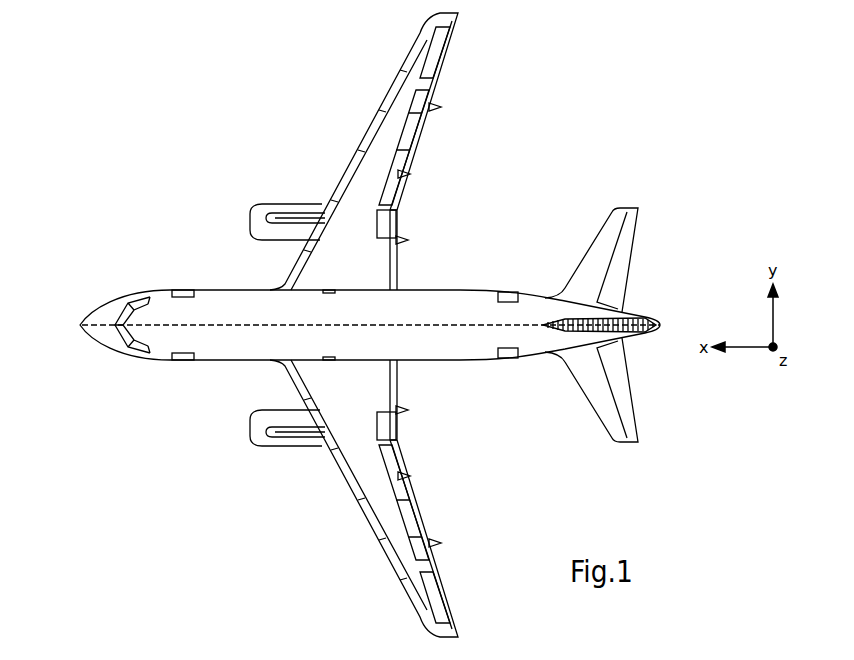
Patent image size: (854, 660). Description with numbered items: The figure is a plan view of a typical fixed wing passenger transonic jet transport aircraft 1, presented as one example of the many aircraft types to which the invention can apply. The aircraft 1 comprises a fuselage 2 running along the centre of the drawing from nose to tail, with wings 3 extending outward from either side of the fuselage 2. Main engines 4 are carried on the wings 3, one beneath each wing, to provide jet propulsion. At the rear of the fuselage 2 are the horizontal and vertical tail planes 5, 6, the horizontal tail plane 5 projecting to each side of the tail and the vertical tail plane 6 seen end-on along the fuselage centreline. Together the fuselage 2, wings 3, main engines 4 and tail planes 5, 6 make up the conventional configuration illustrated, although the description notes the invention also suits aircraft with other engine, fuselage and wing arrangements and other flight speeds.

The aircraft 1 is at (125, 120).
The fuselage 2 is at (192, 347).
The wings 3 is at (350, 225).
The main engines 4 is at (252, 204).
The horizontal tail plane 5 is at (588, 247).
The vertical tail plane 6 is at (600, 320).